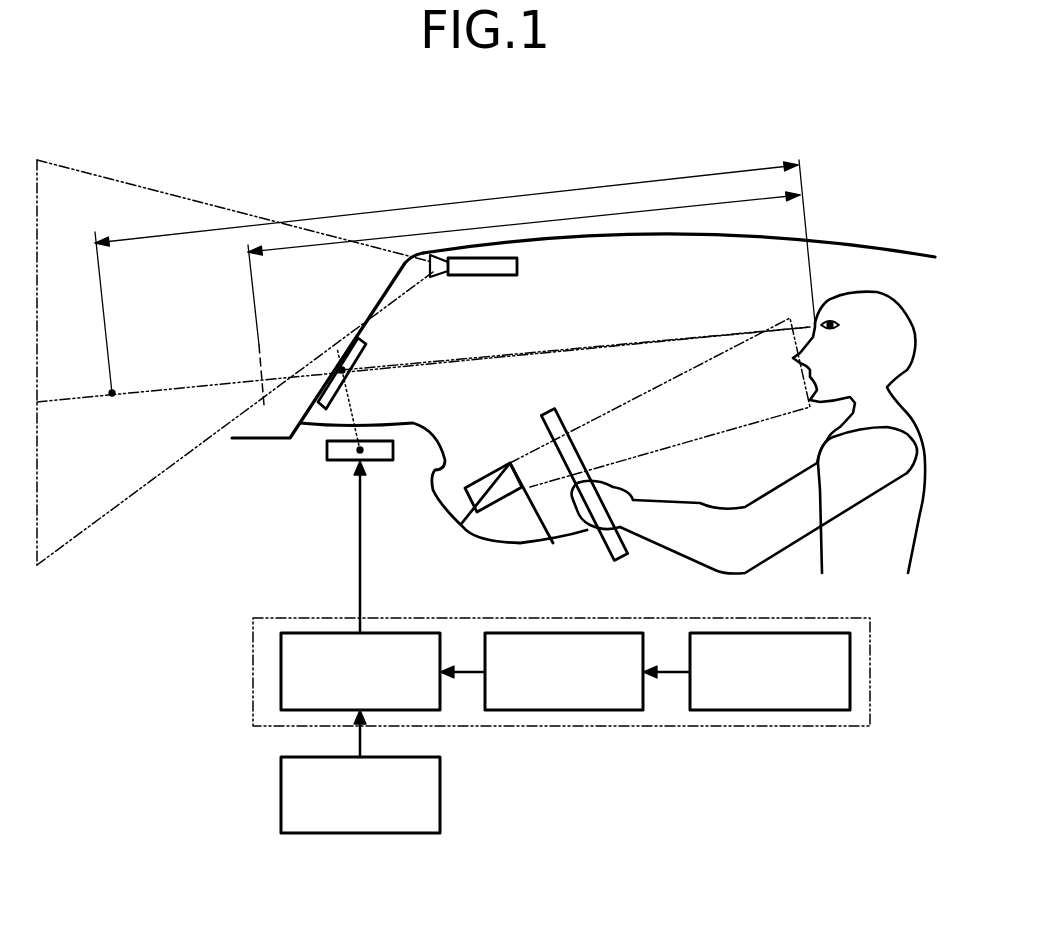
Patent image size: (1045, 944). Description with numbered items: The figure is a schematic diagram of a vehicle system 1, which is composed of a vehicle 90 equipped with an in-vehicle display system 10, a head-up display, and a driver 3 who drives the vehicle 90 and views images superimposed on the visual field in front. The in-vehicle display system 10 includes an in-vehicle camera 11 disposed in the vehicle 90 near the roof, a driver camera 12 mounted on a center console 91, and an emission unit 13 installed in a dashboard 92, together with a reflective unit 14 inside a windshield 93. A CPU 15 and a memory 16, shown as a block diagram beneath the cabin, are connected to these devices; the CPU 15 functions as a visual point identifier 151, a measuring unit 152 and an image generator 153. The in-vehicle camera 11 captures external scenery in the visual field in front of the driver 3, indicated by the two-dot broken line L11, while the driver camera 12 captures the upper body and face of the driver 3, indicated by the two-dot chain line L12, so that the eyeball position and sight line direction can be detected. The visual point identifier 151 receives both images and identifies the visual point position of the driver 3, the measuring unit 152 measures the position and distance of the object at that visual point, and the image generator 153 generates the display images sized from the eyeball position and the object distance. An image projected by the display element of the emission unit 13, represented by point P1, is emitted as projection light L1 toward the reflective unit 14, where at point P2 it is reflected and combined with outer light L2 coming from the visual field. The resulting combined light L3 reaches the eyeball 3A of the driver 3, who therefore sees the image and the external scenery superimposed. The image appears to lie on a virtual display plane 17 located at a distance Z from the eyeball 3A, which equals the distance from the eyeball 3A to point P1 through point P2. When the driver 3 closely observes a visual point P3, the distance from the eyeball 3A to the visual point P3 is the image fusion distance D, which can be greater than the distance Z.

The vehicle system 1 is at (269, 327).
The driver 3 is at (870, 291).
The eyeball 3A is at (830, 320).
The in-vehicle display system 10 is at (500, 686).
The in-vehicle camera 11 is at (517, 266).
The driver camera 12 is at (484, 486).
The emission unit 13 is at (327, 452).
The reflective unit 14 is at (366, 348).
The CPU 15 is at (723, 728).
The memory 16 is at (413, 822).
The virtual display plane 17 is at (260, 357).
The vehicle 90 is at (930, 244).
The center console 91 is at (513, 528).
The dashboard 92 is at (422, 432).
The windshield 93 is at (376, 300).
The visual point identifier 151 is at (828, 697).
The measuring unit 152 is at (624, 697).
The image generator 153 is at (292, 637).
The image fusion distance D is at (396, 208).
The distance Z is at (721, 207).
The projection light L1 is at (348, 390).
The outer light L2 is at (75, 405).
The combined light L3 is at (582, 350).
The two-dot broken line L11 is at (122, 180).
The two-dot chain line L12 is at (738, 434).
The point P1 is at (362, 452).
The point P2 is at (341, 368).
The visual point P3 is at (111, 391).